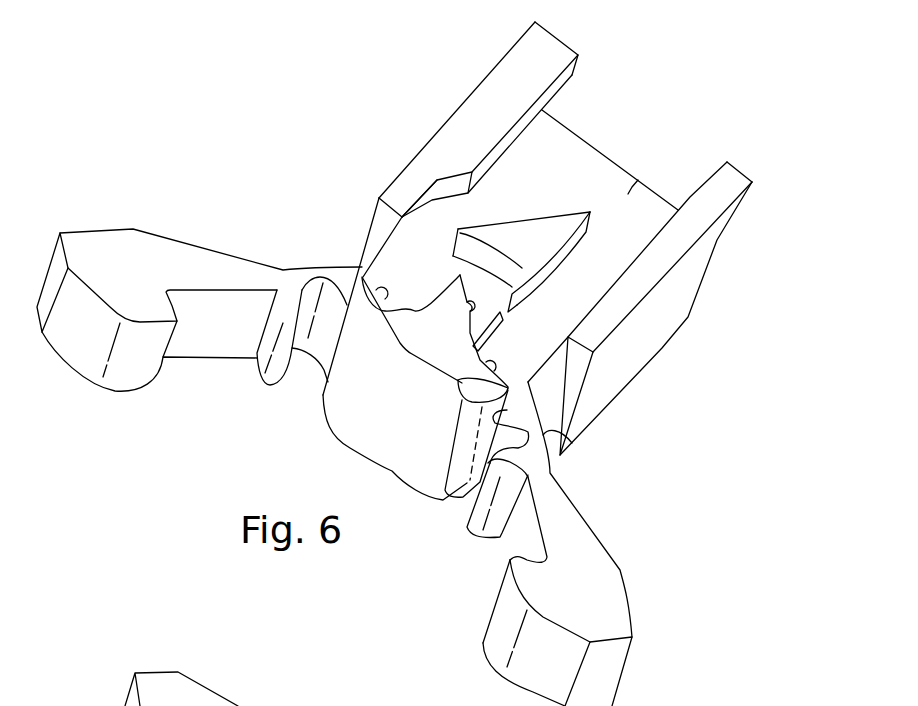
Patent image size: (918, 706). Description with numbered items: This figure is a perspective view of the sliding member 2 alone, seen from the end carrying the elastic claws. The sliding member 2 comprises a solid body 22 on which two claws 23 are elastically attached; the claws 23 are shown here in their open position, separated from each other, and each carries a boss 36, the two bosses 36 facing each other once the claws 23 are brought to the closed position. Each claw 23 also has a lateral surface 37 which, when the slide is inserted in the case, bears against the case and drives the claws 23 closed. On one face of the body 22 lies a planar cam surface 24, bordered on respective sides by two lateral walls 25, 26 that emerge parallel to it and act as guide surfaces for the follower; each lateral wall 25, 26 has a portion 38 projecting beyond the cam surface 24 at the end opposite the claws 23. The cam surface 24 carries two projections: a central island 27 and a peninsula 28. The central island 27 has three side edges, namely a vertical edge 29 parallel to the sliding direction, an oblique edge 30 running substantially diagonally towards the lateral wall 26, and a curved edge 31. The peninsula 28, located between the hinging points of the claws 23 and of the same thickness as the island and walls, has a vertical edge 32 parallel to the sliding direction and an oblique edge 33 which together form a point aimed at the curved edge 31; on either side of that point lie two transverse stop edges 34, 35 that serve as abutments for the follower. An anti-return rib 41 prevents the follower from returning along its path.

The sliding member 2 is at (405, 135).
The body 22 is at (667, 337).
The claws 23 is at (110, 241).
The cam surface 24 is at (632, 187).
The lateral wall 25 is at (715, 207).
The lateral wall 26 is at (482, 108).
The central island 27 is at (553, 227).
The peninsula 28 is at (425, 320).
The vertical edge 29 is at (557, 260).
The oblique edge 30 is at (537, 213).
The curved edge 31 is at (492, 249).
The vertical edge 32 is at (443, 301).
The oblique edge 33 is at (465, 321).
The stop edge 34 is at (371, 302).
The stop edge 35 is at (472, 402).
The boss 36 is at (147, 373).
The lateral surface 37 is at (317, 267).
The projecting portion 38 is at (550, 52).
The anti-return rib 41 is at (492, 330).